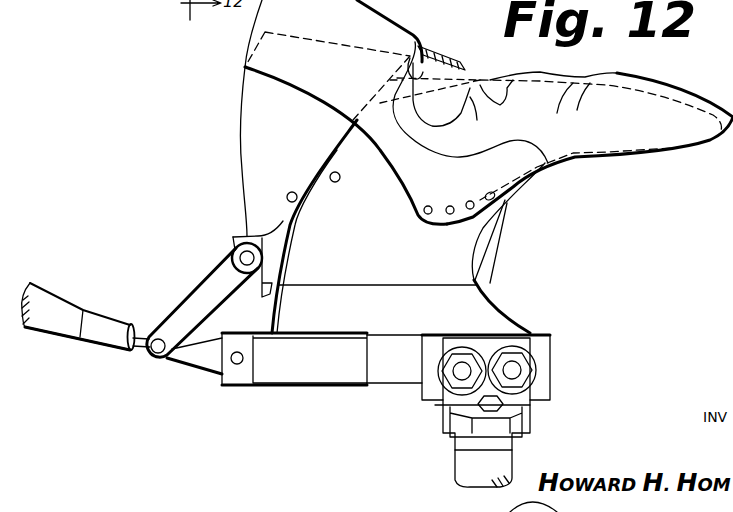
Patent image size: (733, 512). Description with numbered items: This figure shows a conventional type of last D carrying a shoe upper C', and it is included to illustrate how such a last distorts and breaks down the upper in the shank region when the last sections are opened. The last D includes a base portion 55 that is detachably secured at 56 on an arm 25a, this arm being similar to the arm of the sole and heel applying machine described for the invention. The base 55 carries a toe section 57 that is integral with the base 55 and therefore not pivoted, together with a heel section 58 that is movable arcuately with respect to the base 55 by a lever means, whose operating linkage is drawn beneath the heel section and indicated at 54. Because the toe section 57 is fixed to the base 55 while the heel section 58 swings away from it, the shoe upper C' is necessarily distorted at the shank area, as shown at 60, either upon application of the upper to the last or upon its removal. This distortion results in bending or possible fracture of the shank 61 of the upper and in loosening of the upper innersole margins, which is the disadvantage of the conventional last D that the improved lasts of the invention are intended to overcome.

The heel section 58 is at (245, 118).
The last D is at (457, 303).
The shoe upper C' is at (563, 133).
The toe section 57 is at (583, 147).
The distortion of the shoe upper at the shank area 60 is at (470, 78).
The shank 61 is at (460, 40).
The lever arm 54 is at (190, 375).
The base portion 55 is at (382, 368).
The securing means 56 is at (517, 370).
The arm 25a is at (493, 467).